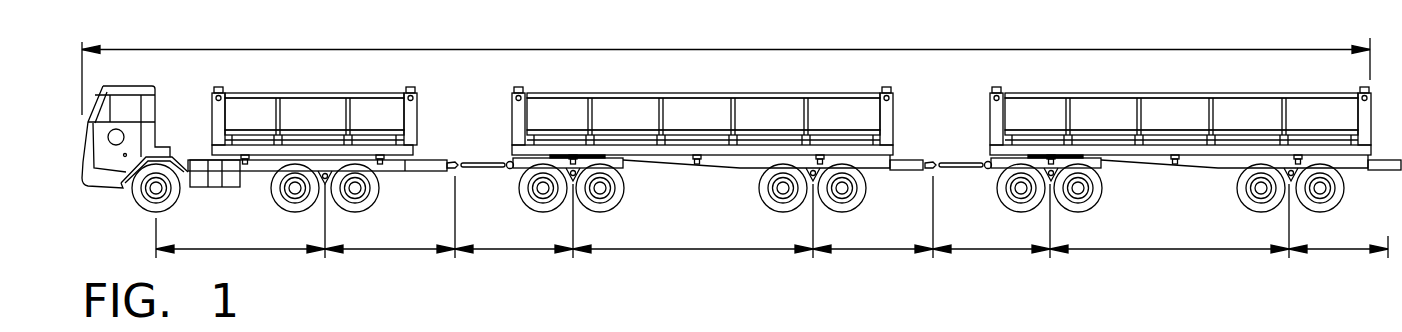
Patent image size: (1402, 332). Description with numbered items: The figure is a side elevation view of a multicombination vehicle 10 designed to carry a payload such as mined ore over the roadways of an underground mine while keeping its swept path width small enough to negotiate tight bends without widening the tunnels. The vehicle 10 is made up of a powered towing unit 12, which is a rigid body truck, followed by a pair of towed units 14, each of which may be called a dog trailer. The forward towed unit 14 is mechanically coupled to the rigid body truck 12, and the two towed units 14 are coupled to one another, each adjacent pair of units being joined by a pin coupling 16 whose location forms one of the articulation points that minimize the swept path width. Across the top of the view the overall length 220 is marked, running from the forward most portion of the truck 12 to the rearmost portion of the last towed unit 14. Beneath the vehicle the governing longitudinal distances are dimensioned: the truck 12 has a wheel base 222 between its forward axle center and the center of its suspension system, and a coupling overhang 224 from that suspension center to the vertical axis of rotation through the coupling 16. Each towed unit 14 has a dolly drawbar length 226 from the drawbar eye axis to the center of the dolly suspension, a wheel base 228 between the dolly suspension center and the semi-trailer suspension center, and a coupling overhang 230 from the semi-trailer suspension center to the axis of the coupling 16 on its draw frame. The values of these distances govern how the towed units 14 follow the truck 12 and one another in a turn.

The multicombination vehicle 10 is at (654, 36).
The powered towing unit 12 is at (315, 88).
The towed unit 14 is at (696, 86).
The pin coupling 16 is at (455, 138).
The overall length 220 is at (846, 49).
The wheel base 222 is at (258, 249).
The coupling overhang 224 is at (368, 249).
The dolly drawbar length 226 is at (532, 249).
The wheel base 228 is at (660, 249).
The coupling overhang 230 is at (849, 249).